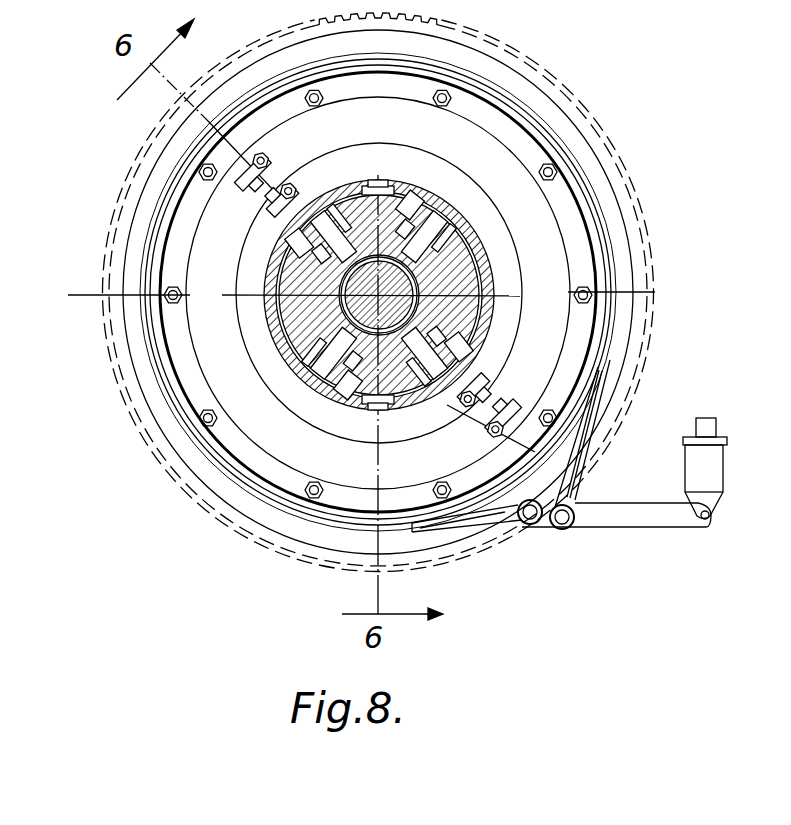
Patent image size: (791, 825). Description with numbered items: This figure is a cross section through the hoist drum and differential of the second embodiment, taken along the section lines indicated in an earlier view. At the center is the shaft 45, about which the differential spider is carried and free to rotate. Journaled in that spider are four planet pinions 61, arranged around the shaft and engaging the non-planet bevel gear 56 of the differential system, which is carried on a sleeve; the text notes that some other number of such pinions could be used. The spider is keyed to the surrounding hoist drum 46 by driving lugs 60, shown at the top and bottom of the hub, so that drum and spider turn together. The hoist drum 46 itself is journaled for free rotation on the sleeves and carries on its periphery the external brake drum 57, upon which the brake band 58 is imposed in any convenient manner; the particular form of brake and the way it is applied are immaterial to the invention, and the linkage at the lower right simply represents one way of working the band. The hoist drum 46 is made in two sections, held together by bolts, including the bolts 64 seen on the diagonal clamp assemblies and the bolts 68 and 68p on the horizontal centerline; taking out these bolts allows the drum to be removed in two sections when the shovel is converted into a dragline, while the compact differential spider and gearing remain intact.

The brake band 58 is at (508, 90).
The external brake drum 57 is at (540, 137).
The non-planet bevel gear 56 is at (520, 297).
The bolt 68 is at (638, 288).
The bolt 68p is at (111, 289).
The shaft 45 is at (343, 295).
The hoist drum 46 is at (432, 213).
The planet pinion 61 is at (316, 200).
The driving lug 60 is at (382, 193).
The bolt 64 is at (280, 205).